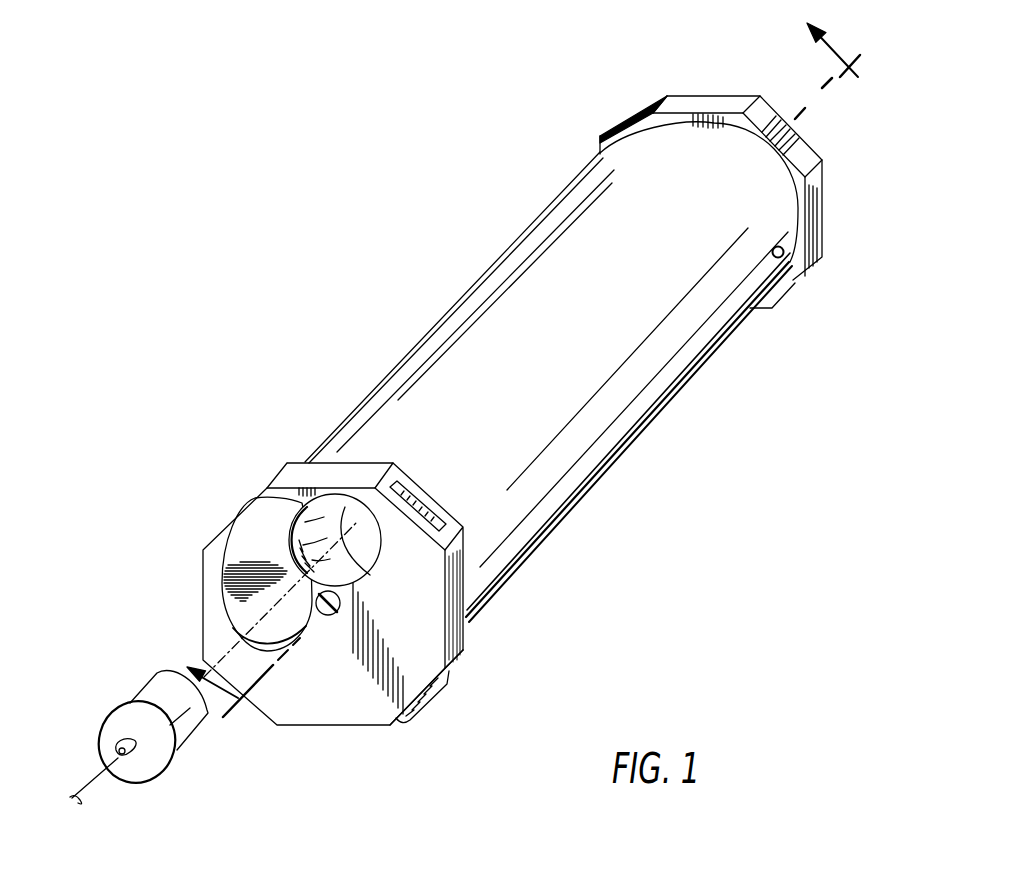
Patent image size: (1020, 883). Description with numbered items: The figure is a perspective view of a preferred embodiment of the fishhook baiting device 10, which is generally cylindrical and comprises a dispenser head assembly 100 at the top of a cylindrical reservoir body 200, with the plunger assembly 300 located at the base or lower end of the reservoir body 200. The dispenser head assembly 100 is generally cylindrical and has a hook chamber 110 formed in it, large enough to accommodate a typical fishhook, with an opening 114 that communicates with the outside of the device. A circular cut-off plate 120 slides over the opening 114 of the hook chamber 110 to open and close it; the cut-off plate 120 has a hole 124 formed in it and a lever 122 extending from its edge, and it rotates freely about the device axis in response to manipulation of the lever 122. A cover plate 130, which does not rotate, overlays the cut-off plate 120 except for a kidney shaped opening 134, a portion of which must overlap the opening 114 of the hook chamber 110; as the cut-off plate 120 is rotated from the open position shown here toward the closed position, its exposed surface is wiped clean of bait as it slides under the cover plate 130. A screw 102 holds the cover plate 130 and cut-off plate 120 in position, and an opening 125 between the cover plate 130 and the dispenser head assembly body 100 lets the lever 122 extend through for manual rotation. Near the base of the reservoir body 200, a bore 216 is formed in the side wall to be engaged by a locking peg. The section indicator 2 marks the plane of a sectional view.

The fishhook baiting device 10 is at (461, 226).
The dispenser head assembly 100 is at (356, 475).
The screw 102 is at (342, 603).
The hook chamber 110 is at (310, 502).
The opening 114 is at (318, 520).
The cut-off plate 120 is at (223, 590).
The lever 122 is at (450, 676).
The hole 124 is at (357, 528).
The opening 125 is at (453, 582).
The cover plate 130 is at (293, 705).
The kidney shaped opening 134 is at (235, 622).
The reservoir body 200 is at (431, 378).
The bore 216 is at (787, 258).
The plunger assembly 300 is at (680, 100).
The section line 2- 2 is at (530, 383).